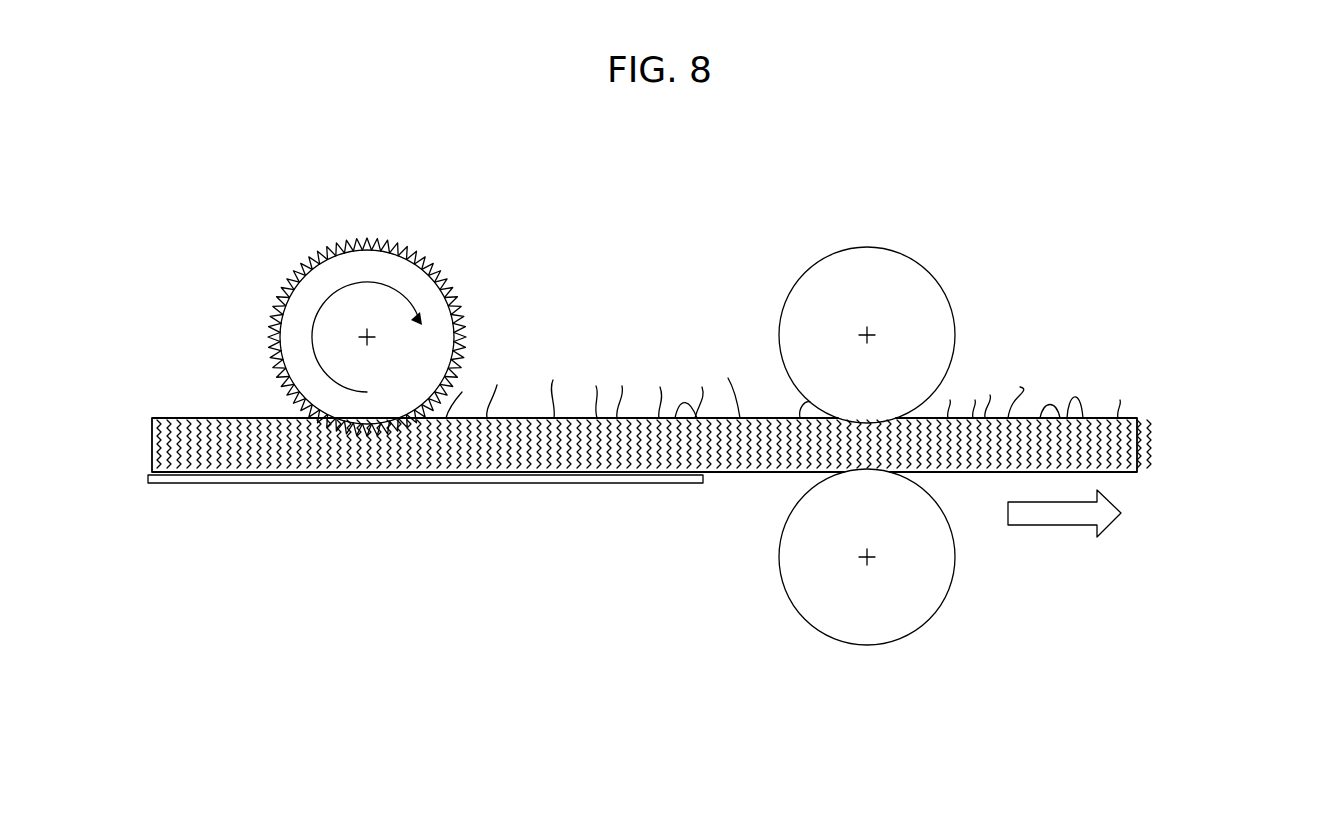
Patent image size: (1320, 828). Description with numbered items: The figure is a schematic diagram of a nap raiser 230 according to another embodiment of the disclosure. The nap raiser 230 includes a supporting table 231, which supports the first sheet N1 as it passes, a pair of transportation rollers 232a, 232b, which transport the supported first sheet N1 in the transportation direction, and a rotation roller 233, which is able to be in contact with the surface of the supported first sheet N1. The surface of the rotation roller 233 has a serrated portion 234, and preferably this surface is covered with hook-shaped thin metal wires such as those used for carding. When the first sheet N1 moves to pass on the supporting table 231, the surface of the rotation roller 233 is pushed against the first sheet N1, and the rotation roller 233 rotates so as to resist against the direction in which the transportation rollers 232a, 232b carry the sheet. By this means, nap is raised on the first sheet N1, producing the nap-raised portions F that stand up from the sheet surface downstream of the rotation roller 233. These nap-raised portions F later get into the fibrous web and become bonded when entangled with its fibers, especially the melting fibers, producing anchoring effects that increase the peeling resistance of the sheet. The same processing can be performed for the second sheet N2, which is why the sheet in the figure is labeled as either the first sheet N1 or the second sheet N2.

The nap raiser 230 is at (200, 201).
The supporting table 231 is at (203, 483).
The transportation roller 232a is at (917, 632).
The transportation roller 232b is at (907, 258).
The rotation roller 233 is at (318, 256).
The serrated portion 234 is at (345, 240).
The first sheet N1 is at (706, 445).
The second sheet N2 is at (1138, 441).
The nap-raised portions F is at (553, 380).